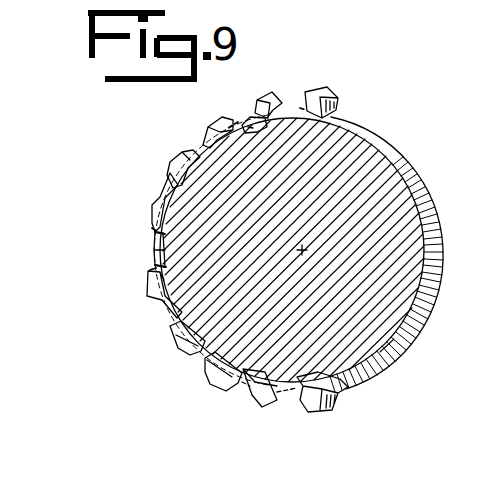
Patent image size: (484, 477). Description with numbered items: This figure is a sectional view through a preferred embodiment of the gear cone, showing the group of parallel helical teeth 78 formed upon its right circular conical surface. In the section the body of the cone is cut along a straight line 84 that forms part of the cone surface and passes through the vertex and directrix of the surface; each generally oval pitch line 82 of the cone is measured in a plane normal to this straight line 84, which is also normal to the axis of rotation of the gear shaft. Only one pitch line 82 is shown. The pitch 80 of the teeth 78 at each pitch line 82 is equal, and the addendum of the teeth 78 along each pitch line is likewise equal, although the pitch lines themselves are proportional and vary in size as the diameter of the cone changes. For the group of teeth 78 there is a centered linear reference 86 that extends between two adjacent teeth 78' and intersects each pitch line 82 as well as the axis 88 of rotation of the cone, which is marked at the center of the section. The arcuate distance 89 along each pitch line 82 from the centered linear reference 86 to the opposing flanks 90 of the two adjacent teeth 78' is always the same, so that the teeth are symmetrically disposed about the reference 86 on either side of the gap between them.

The helical teeth 78 is at (257, 256).
The adjacent teeth 78' is at (138, 255).
The pitch 80 is at (250, 118).
The pitch line 82 is at (202, 146).
The straight line 84 is at (165, 248).
The centered linear reference 86 is at (160, 248).
The axis of rotation 88 is at (303, 252).
The arcuate distance 89 is at (152, 235).
The opposing flanks 90 is at (153, 222).